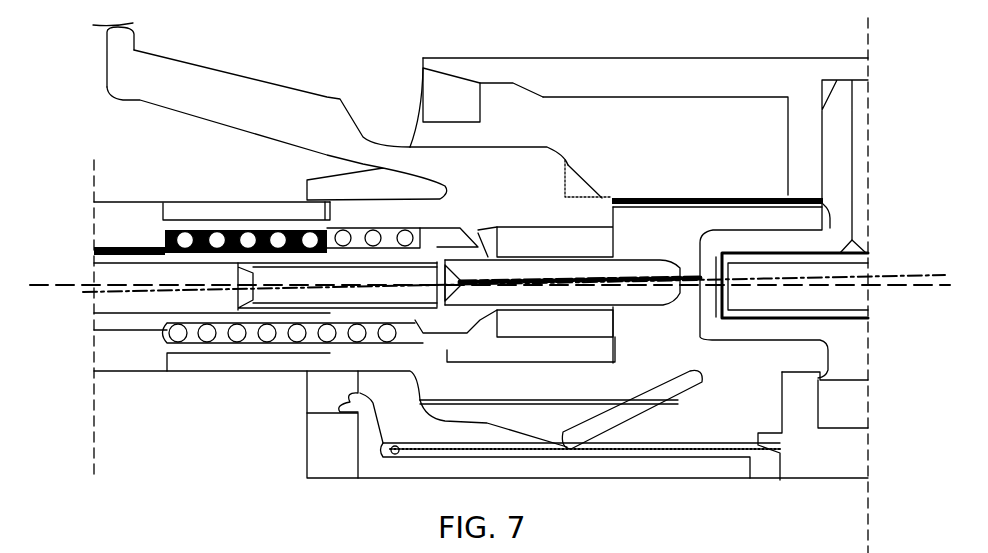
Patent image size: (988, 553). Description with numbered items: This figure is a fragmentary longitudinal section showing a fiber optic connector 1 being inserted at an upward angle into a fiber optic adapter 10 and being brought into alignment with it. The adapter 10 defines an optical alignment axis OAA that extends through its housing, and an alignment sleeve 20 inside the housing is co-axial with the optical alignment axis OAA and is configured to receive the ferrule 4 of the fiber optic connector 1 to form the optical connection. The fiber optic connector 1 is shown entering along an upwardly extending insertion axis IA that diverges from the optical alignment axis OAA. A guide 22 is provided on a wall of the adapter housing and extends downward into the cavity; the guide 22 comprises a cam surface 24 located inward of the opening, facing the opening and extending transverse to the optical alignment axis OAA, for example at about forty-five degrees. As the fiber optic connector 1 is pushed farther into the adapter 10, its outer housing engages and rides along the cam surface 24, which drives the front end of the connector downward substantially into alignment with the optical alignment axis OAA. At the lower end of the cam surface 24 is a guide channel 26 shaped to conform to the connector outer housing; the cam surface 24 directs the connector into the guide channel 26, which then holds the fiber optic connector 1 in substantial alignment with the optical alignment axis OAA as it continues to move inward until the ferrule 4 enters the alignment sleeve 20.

The fiber optic connector 1 is at (155, 184).
The ferrule 4 is at (645, 295).
The adapter 10 is at (401, 88).
The alignment sleeve 20 is at (753, 238).
The guide 22 is at (644, 115).
The cam surface 24 is at (577, 173).
The guide channel 26 is at (700, 195).
The optical alignment axis OAA is at (73, 285).
The insertion axis IA is at (892, 275).